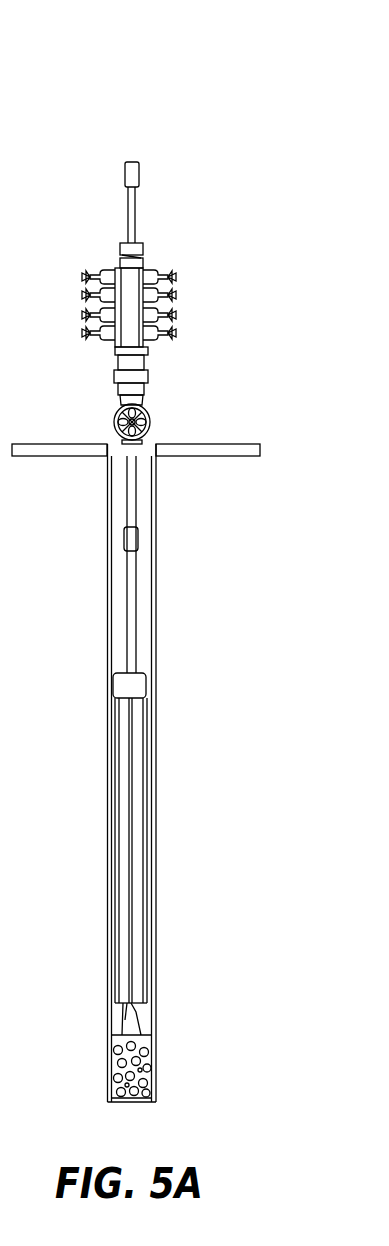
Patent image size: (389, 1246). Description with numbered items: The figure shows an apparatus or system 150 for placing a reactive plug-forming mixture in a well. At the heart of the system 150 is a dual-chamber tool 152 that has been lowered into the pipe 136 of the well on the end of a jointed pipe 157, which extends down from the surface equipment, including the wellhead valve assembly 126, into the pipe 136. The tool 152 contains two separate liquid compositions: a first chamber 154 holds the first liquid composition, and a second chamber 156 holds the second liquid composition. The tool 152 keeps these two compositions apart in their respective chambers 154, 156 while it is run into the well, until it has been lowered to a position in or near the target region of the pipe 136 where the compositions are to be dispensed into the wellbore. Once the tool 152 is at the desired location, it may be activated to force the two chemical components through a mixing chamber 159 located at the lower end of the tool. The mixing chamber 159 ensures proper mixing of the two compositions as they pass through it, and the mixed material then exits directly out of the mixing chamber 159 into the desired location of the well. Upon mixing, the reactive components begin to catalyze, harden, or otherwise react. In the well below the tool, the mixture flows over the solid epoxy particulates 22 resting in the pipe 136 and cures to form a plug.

The apparatus or system 150 is at (102, 112).
The jointed pipe 157 is at (137, 210).
The wellhead valve tree 126 is at (85, 314).
The pipe 136 is at (156, 594).
The dual-chamber tool 152 is at (88, 710).
The second chamber 156 is at (141, 817).
The first chamber 154 is at (119, 830).
The mixing chamber 159 is at (142, 1007).
The solid epoxy particulates 22 is at (152, 1045).